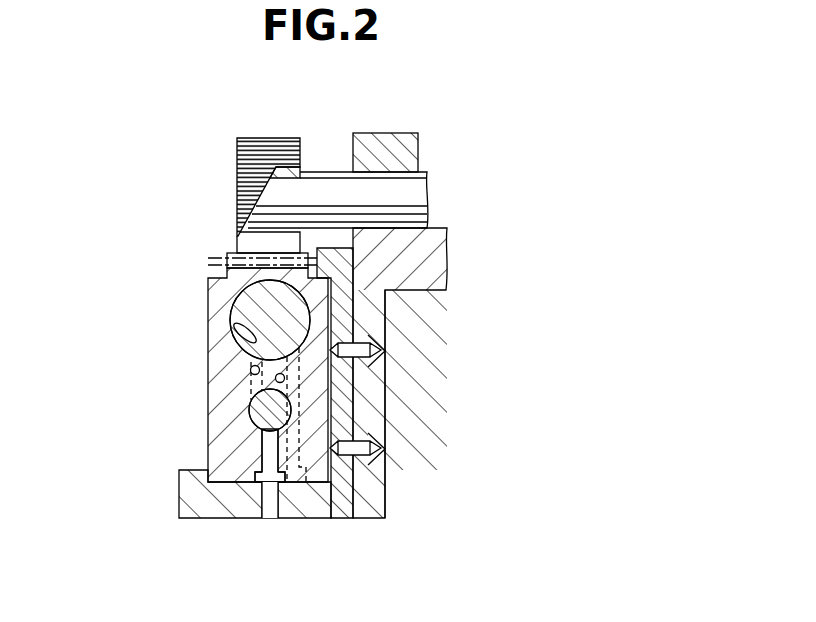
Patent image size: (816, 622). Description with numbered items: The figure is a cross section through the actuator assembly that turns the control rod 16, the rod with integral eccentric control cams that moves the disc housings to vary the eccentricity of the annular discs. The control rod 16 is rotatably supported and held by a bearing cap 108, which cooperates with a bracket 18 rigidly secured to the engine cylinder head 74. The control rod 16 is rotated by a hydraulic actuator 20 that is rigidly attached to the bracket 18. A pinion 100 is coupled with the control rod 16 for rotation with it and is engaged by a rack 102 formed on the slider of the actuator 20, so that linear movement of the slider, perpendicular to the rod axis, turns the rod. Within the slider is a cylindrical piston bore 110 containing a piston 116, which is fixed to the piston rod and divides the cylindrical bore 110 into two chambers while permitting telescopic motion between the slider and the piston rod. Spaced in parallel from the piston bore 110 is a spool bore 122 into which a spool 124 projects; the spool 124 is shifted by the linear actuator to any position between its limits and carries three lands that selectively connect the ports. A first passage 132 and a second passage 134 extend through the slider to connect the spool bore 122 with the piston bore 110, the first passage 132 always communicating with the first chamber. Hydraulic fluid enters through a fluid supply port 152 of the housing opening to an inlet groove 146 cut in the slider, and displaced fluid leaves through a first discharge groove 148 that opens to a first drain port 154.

The control rod 16 is at (417, 185).
The bracket 18 is at (427, 260).
The actuator 20 is at (194, 265).
The engine cylinder head 74 is at (410, 468).
The pinion 100 is at (267, 152).
The rack 102 is at (233, 252).
The bearing cap 108 is at (387, 133).
The cylindrical bore 110 is at (240, 346).
The piston 116 is at (253, 310).
The spool bore 122 is at (262, 431).
The spool 124 is at (258, 413).
The first passage 132 is at (285, 380).
The second passage 134 is at (250, 371).
The inlet groove 146 is at (267, 478).
The first discharge groove 148 is at (288, 487).
The fluid supply port 152 is at (270, 508).
The first drain port 154 is at (295, 480).